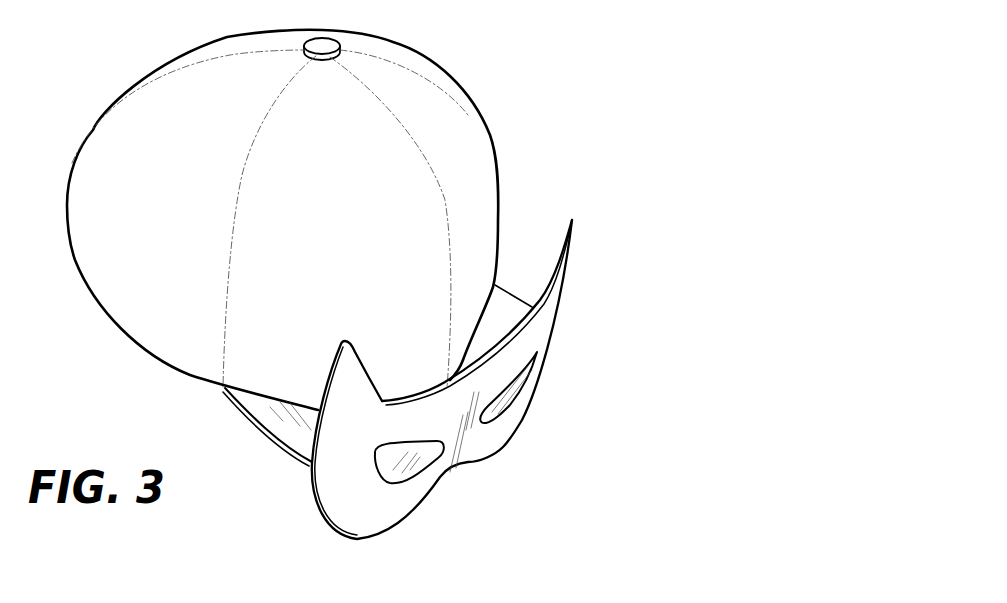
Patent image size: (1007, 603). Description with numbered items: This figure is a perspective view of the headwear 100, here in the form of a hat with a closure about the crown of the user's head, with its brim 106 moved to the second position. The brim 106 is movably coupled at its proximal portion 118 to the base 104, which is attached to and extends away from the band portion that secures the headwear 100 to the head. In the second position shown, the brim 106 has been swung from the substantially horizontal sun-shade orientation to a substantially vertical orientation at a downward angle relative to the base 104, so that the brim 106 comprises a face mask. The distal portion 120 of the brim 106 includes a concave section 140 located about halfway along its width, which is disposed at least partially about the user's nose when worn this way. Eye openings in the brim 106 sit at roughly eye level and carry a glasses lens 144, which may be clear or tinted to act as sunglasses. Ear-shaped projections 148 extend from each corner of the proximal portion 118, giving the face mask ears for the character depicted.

The headwear 100 is at (517, 111).
The base 104 is at (278, 420).
The brim 106 is at (557, 328).
The proximal portion 118 is at (518, 356).
The distal portion 120 is at (497, 442).
The concave section 140 is at (472, 484).
The glasses lens 144 is at (402, 476).
The ear-shaped projections 148 is at (343, 370).